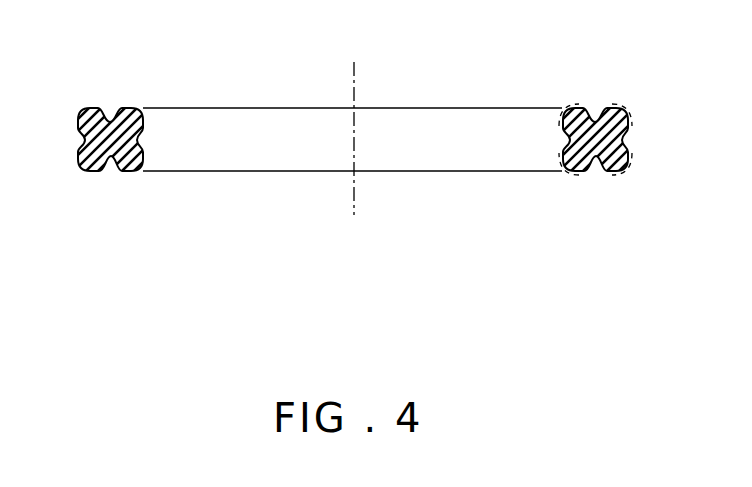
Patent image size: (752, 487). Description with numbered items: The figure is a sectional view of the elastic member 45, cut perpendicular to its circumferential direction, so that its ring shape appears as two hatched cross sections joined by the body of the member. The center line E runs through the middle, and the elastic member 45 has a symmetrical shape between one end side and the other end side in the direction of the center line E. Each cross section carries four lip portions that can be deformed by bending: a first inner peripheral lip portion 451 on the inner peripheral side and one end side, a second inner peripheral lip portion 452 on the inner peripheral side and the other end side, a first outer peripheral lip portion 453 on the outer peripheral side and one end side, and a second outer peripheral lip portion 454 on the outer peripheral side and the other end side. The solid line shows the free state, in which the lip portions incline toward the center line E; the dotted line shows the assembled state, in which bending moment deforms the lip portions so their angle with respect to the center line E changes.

The elastic member 45 is at (296, 97).
The first inner peripheral lip portion 451 is at (131, 171).
The second inner peripheral lip portion 452 is at (137, 109).
The first outer peripheral lip portion 453 is at (93, 171).
The second outer peripheral lip portion 454 is at (93, 109).
The center line E is at (354, 193).